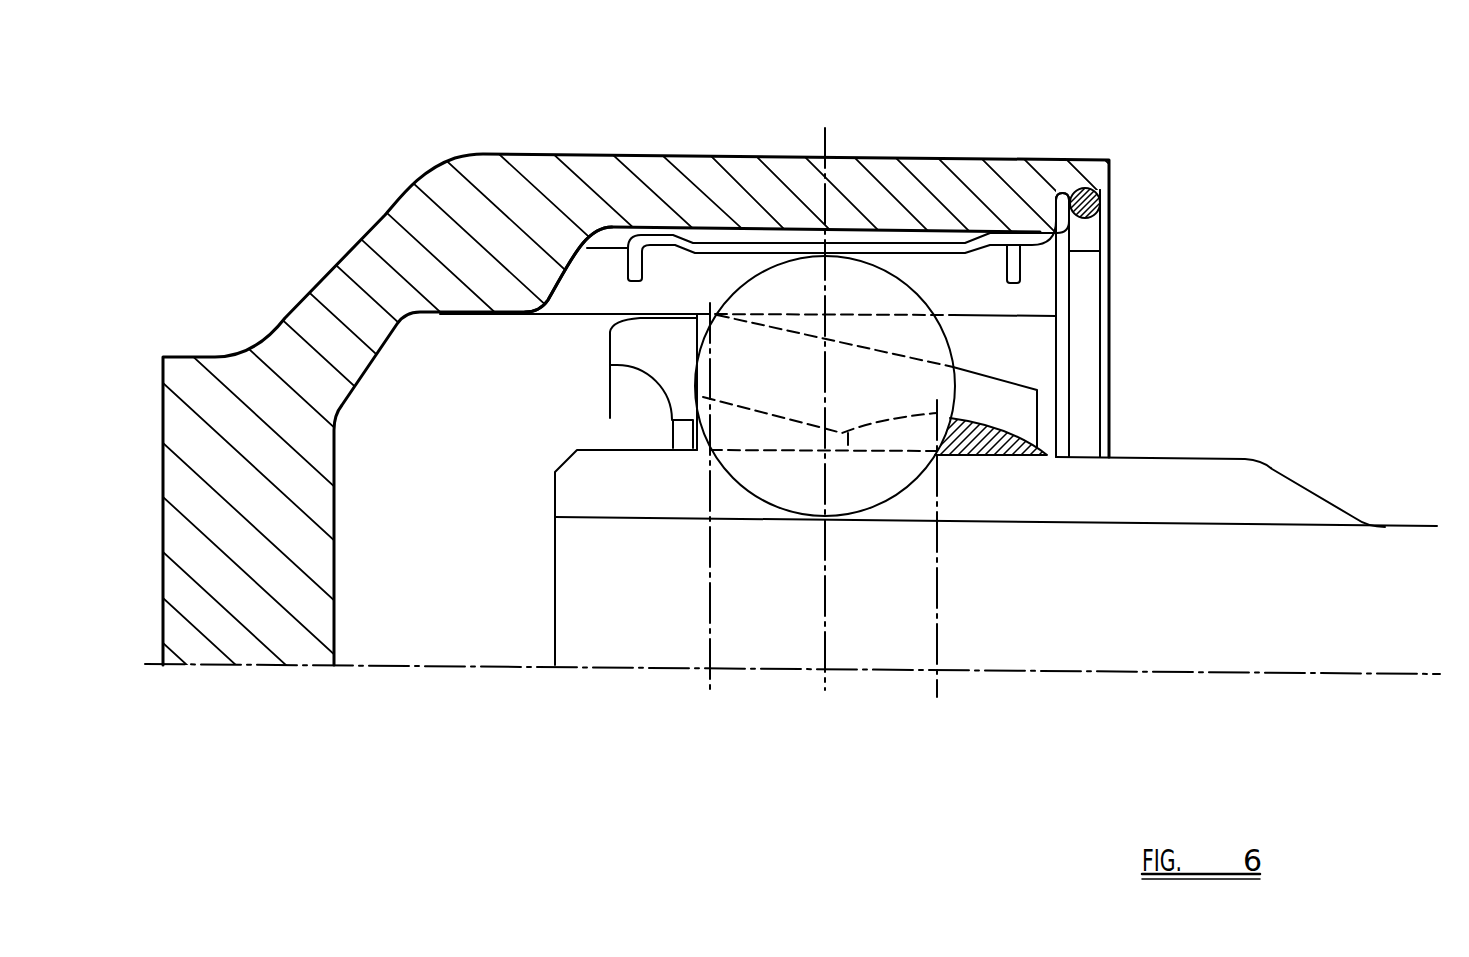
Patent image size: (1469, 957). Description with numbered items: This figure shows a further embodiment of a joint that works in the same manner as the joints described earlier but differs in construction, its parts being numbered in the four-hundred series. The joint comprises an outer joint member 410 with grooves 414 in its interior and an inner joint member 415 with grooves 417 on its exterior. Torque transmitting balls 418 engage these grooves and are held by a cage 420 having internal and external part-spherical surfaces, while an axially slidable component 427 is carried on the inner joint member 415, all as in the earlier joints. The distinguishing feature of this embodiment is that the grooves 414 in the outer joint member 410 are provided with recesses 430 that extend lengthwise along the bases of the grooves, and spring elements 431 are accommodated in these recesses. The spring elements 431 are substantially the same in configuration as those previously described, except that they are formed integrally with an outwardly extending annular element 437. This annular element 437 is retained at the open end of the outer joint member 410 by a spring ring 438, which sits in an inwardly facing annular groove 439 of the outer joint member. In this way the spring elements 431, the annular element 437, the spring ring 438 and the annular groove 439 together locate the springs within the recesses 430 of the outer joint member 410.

The outer joint member 410 is at (558, 188).
The grooves 414 is at (572, 292).
The recesses 430 is at (620, 242).
The annular element 437 is at (1057, 195).
The spring ring 438 is at (1092, 190).
The annular groove 439 is at (1090, 252).
The spring elements 431 is at (975, 279).
The torque transmitting balls 418 is at (743, 282).
The cage 420 is at (1020, 414).
The axially slidable component 427 is at (1013, 457).
The grooves 417 is at (1192, 481).
The inner joint member 415 is at (988, 652).